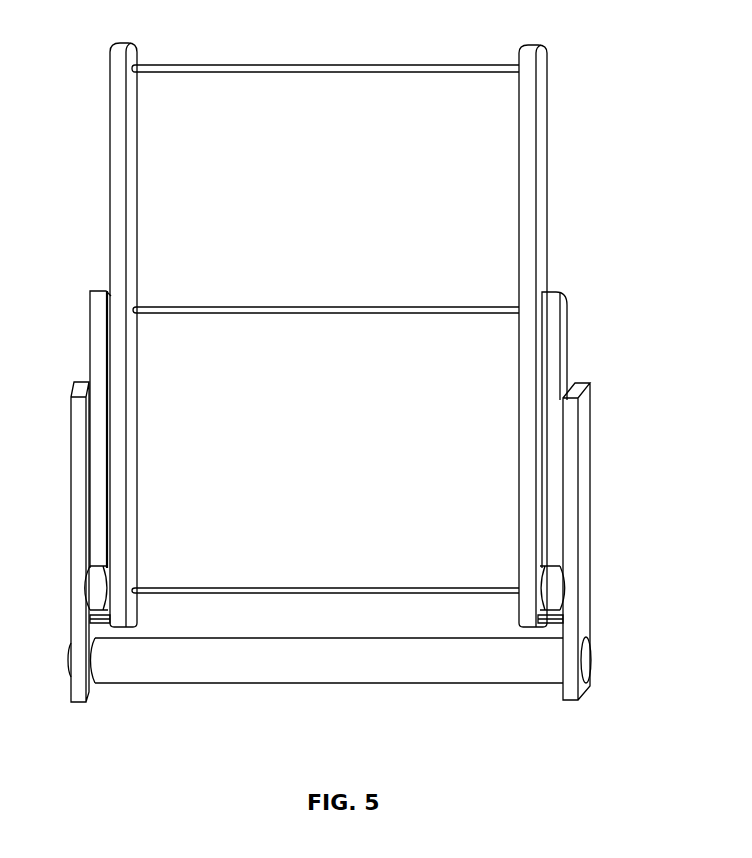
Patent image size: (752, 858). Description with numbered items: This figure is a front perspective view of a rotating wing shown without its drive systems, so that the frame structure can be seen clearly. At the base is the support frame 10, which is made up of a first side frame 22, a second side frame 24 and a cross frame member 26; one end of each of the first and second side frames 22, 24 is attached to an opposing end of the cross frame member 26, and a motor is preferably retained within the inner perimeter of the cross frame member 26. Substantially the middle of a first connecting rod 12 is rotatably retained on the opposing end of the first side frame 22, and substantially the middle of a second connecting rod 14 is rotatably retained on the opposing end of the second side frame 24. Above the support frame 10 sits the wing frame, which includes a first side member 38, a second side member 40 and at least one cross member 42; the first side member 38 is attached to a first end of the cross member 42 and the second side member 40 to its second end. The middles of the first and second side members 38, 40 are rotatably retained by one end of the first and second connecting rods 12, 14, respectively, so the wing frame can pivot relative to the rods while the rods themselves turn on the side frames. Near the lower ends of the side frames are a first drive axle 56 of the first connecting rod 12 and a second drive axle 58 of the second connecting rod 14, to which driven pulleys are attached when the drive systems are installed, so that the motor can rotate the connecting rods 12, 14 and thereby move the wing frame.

The support frame 10 is at (221, 708).
The first connecting rod 12 is at (567, 300).
The second connecting rod 14 is at (90, 305).
The first side frame 22 is at (591, 525).
The second side frame 24 is at (71, 497).
The cross frame member 26 is at (333, 683).
The first side member 38 is at (547, 117).
The second side member 40 is at (110, 180).
The cross member 42 is at (353, 65).
The first drive axle 56 is at (545, 624).
The second drive axle 58 is at (96, 622).